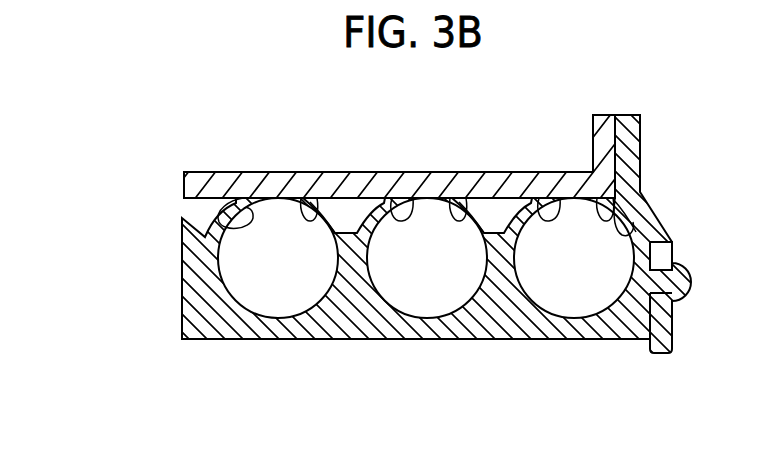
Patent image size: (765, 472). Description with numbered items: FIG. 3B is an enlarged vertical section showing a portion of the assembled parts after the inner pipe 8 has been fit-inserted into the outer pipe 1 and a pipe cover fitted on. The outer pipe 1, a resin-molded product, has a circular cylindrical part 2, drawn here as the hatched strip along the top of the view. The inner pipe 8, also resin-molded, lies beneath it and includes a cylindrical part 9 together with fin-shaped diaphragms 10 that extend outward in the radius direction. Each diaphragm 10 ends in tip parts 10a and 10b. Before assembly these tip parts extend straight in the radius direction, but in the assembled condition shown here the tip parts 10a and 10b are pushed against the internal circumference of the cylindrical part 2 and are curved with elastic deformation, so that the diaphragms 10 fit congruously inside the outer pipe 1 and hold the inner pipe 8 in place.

The outer pipe 1 is at (348, 146).
The circular cylindrical part 2 is at (362, 190).
The inner pipe 8 is at (160, 249).
The cylindrical part 9 is at (434, 327).
The fin-shaped diaphragm 10 is at (203, 287).
The tip part 10a is at (297, 198).
The tip part 10b is at (221, 212).